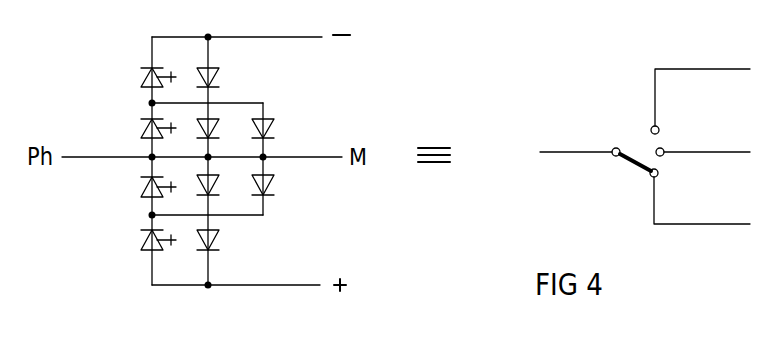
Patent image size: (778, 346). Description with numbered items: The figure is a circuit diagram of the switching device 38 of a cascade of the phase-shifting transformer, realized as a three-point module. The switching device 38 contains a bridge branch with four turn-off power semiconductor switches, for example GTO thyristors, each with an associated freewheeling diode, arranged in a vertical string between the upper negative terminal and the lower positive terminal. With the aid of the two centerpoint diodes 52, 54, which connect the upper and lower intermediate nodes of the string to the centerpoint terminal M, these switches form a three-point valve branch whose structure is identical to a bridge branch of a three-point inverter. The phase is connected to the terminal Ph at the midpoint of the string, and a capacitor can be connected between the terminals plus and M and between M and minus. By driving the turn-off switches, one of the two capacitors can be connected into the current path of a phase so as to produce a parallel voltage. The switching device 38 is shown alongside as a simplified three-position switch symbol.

The centerpoint diode 52 is at (273, 131).
The centerpoint diode 54 is at (271, 189).
The switching device 38 is at (633, 165).